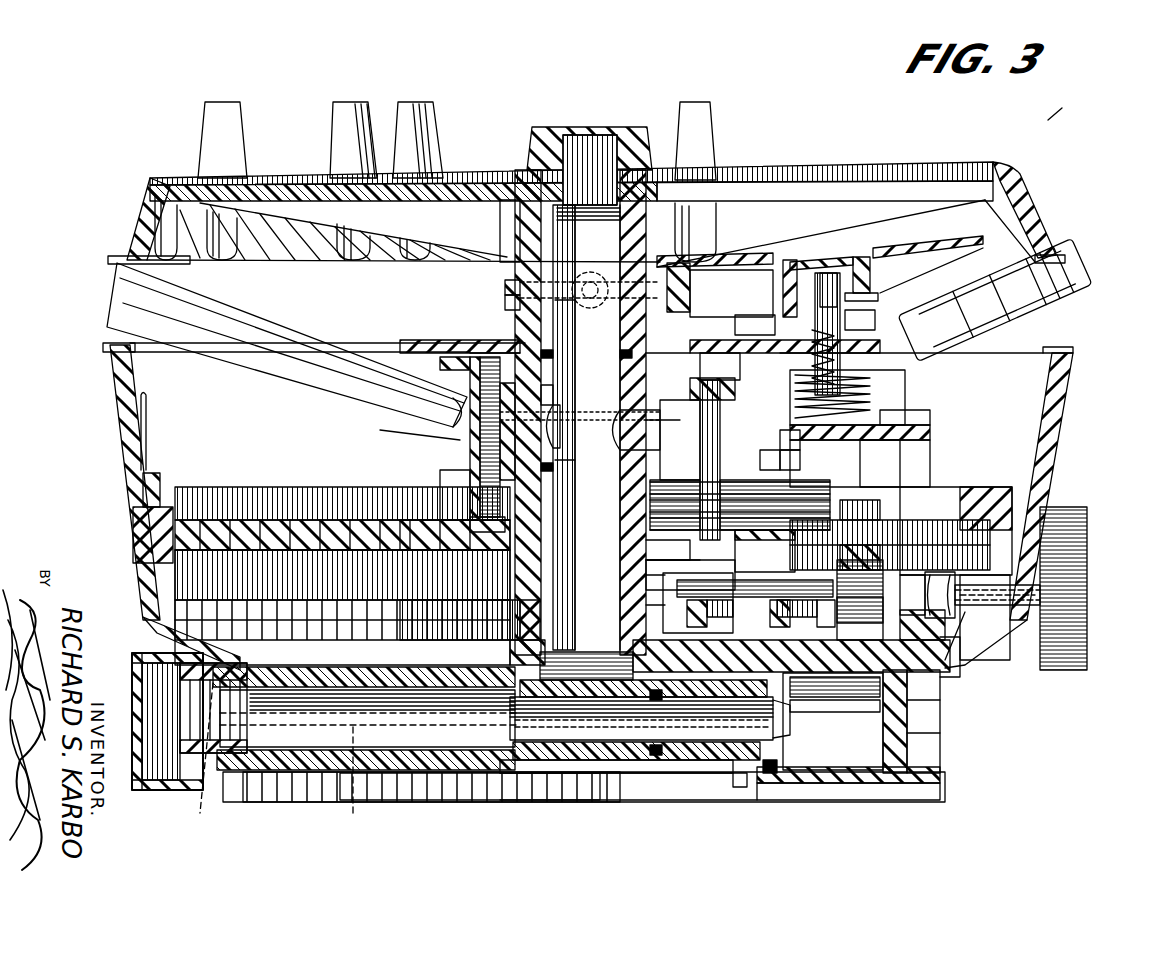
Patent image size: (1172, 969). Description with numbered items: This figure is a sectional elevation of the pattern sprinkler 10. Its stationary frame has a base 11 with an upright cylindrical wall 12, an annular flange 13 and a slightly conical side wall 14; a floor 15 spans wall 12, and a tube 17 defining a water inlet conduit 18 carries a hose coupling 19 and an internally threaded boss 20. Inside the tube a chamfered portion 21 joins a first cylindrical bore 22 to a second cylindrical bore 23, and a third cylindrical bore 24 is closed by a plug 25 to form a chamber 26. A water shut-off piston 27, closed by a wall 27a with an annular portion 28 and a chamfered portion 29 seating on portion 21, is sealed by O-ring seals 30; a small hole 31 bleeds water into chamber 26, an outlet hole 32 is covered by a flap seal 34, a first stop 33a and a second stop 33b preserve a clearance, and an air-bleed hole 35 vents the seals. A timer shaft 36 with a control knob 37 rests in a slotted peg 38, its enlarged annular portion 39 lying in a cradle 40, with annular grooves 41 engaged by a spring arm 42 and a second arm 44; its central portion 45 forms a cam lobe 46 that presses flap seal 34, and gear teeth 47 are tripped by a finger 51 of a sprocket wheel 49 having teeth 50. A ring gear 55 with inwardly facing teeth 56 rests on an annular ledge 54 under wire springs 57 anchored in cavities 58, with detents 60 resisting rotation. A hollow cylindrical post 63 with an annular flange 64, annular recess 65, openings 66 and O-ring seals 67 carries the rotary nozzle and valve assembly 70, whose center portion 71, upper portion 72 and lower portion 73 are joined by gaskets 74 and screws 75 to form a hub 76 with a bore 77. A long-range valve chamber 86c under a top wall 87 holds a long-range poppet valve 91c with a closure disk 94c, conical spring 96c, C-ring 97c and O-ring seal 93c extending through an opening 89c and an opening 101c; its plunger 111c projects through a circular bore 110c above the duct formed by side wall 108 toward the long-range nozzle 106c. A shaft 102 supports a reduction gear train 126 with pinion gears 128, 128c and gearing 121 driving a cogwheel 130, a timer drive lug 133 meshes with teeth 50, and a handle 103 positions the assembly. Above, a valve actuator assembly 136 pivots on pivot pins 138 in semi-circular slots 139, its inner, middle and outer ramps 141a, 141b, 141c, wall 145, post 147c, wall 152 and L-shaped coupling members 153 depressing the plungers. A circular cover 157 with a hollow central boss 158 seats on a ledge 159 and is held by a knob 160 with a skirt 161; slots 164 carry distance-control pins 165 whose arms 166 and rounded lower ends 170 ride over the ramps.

The timing device 10 is at (1060, 120).
The base 11 is at (114, 502).
The upright cylindrical wall 12 is at (395, 700).
The annular flange 13 is at (165, 640).
The side wall 14 is at (110, 395).
The floor 15 is at (345, 800).
The tube 17 is at (315, 790).
The water inlet conduit 18 is at (196, 718).
The hose coupling 19 is at (150, 790).
The boss 20 is at (610, 660).
The chamfered portion 21 is at (480, 800).
The first cylindrical bore 22 is at (270, 700).
The second cylindrical bore 23 is at (555, 760).
The third cylindrical bore 24 is at (815, 790).
The plug 25 is at (946, 715).
The chamber 26 is at (793, 756).
The water shut-off piston 27 is at (503, 735).
The wall 27a is at (760, 740).
The annular portion 28 is at (795, 690).
The chamfered portion 29 is at (530, 760).
The O-ring seals 30 is at (650, 760).
The small hole 31 is at (790, 705).
The outlet hole 32 is at (880, 700).
The first stop 33a is at (880, 790).
The second stop 33b is at (870, 700).
The flap seal 34 is at (835, 630).
The air-bleed hole 35 is at (735, 790).
The timer shaft 36 is at (745, 630).
The control knob 37 is at (1065, 672).
The slotted peg 38 is at (720, 630).
The enlarged annular portion 39 is at (915, 630).
The cradle 40 is at (975, 612).
The annular grooves 41 is at (920, 575).
The arm 42 is at (932, 575).
The second arm 44 is at (800, 520).
The central portion 45 is at (860, 630).
The cam lobe 46 is at (805, 630).
The gear teeth 47 is at (860, 525).
The sprocket wheel 49 is at (775, 630).
The teeth 50 is at (715, 595).
The finger 51 is at (660, 630).
The annular ledge 54 is at (145, 545).
The ring gear 55 is at (190, 490).
The inwardly facing teeth 56 is at (265, 520).
The wire springs 57 is at (147, 395).
The cavities 58 is at (138, 470).
The detents 60 is at (365, 487).
The hollow cylindrical post 63 is at (640, 575).
The annular flange 64 is at (640, 605).
The annular recess 65 is at (560, 390).
The openings 66 is at (560, 418).
The O-ring seals 67 is at (580, 350).
The rotary nozzle and valve assembly 70 is at (991, 436).
The center portion 71 is at (396, 445).
The upper portion 72 is at (470, 360).
The lower portion 73 is at (470, 500).
The gaskets 74 is at (456, 485).
The screws 75 is at (708, 385).
The hub 76 is at (518, 320).
The bore 77 is at (577, 320).
The long-range valve chamber 86c is at (932, 420).
The top wall 87 is at (792, 440).
The opening 89c is at (932, 437).
The long-range poppet valve 91c is at (780, 453).
The O-ring seal 93c is at (735, 330).
The closure disk 94c is at (892, 455).
The conical spring 96c is at (880, 380).
The C-ring 97c is at (722, 385).
The plate 101c is at (932, 405).
The shaft 102 is at (700, 460).
The handle 103 is at (105, 290).
The long-range nozzle 106c is at (1085, 305).
The side wall 108 is at (722, 360).
The circular bore 110c is at (845, 340).
The plunger 111c is at (800, 258).
The gear 121 is at (650, 488).
The reduction gear train 126 is at (660, 525).
The pinion gear 128 is at (650, 505).
The pinion 128c is at (766, 455).
The cogwheel 130 is at (760, 540).
The timer drive lug 133 is at (645, 545).
The valve actuator assembly 136 is at (993, 228).
The pivot pins 138 is at (505, 300).
The semi-circular slots 139 is at (590, 272).
The inner ramp 141a is at (745, 262).
The middle ramp 141b is at (800, 262).
The outer ramp 141c is at (905, 245).
The wall 145 is at (692, 290).
The post 147c is at (862, 318).
The wall 152 is at (852, 245).
The L-shaped coupling members 153 is at (882, 292).
The circular cover 157 is at (1042, 177).
The hollow central boss 158 is at (520, 215).
The ledge 159 is at (505, 287).
The knob 160 is at (597, 125).
The skirt 161 is at (520, 160).
The slots 164 is at (728, 185).
The distance-control pin 165 is at (228, 93).
The arms 166 is at (440, 100).
The lower end 170 is at (230, 262).